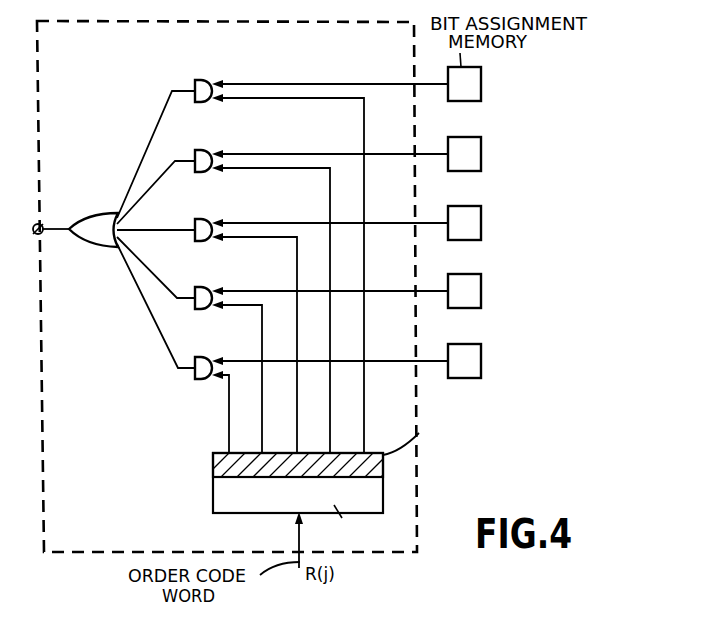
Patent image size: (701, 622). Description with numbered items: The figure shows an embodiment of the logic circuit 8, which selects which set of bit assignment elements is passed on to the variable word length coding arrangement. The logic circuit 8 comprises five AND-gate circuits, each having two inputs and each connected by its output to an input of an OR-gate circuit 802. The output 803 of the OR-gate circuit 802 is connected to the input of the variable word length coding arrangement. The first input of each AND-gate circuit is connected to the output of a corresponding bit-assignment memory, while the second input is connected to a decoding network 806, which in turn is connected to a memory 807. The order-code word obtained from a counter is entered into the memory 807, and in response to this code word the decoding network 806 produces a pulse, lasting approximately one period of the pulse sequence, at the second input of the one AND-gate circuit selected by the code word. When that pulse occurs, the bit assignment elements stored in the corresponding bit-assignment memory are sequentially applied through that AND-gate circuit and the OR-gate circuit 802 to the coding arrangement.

The logic circuit 8 is at (418, 523).
The OR-gate circuit 802 is at (101, 213).
The output 803 is at (44, 235).
The decoding network 806 is at (213, 467).
The memory 807 is at (213, 497).